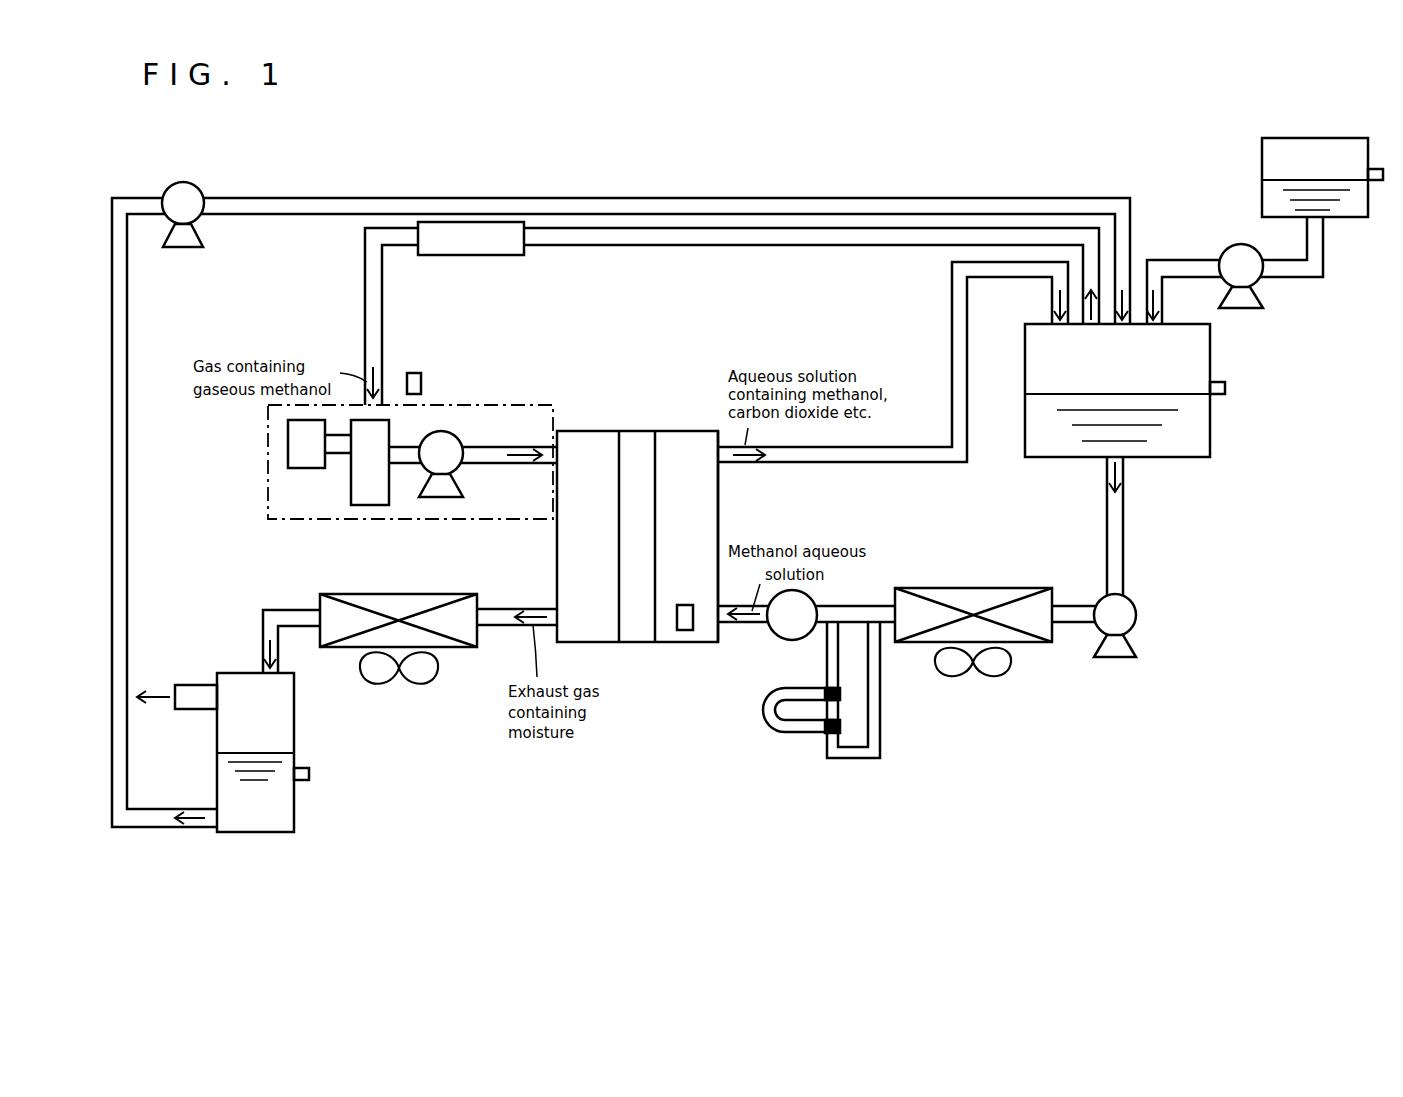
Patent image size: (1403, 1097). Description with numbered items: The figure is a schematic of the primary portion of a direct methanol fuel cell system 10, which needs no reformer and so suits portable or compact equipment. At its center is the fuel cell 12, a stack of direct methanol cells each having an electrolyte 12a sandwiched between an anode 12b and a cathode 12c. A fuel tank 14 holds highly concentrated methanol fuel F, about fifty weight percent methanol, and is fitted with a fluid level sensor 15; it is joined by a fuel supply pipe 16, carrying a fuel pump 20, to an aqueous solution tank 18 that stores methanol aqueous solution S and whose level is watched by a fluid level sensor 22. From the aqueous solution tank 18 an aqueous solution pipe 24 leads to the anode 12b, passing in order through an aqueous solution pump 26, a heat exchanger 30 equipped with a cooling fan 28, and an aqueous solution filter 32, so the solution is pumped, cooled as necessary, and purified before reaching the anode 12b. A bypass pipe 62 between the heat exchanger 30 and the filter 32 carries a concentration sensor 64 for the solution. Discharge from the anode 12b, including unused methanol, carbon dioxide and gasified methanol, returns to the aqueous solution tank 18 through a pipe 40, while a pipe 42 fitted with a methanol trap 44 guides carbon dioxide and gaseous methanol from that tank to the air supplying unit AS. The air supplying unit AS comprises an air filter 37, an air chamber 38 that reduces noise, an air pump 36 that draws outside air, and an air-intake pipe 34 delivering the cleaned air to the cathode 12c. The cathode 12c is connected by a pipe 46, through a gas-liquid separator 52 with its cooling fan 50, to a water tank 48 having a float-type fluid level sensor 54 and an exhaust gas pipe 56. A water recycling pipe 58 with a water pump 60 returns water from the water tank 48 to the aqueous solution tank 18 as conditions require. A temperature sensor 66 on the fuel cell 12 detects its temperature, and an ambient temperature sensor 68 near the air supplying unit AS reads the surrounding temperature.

The fuel cell system 10 is at (151, 138).
The fuel cell 12 is at (645, 384).
The electrolyte 12a is at (648, 431).
The anode 12b is at (684, 431).
The cathode 12c is at (585, 431).
The fuel tank 14 is at (1262, 156).
The fluid level sensor 15 is at (1378, 166).
The methanol fuel F is at (1283, 190).
The fuel supply pipe 16 is at (1323, 265).
The aqueous solution tank 18 is at (1025, 358).
The fuel pump 20 is at (1226, 250).
The fluid level sensor 22 is at (1225, 388).
The methanol aqueous solution S is at (1057, 410).
The aqueous solution pipe 24 is at (1123, 520).
The aqueous solution pump 26 is at (1137, 613).
The cooling fan 28 is at (1000, 672).
The heat exchanger 30 is at (982, 588).
The aqueous solution filter 32 is at (777, 640).
The air-intake pipe 34 is at (503, 466).
The air pump 36 is at (440, 498).
The air filter 37 is at (288, 438).
The air chamber 38 is at (363, 507).
The air supplying unit AS is at (267, 507).
The pipe 40 is at (827, 463).
The pipe 42 is at (363, 287).
The methanol trap 44 is at (472, 255).
The pipe 46 is at (281, 608).
The water tank 48 is at (294, 720).
The cooling fan 50 is at (440, 670).
The gas-liquid separator 52 is at (378, 594).
The fluid level sensor 54 is at (309, 775).
The exhaust gas pipe 56 is at (188, 685).
The water recycling pipe 58 is at (128, 317).
The water pump 60 is at (197, 182).
The bypass pipe 62 is at (880, 700).
The concentration sensor 64 is at (796, 733).
The temperature sensor 66 is at (684, 631).
The ambient temperature sensor 68 is at (417, 372).